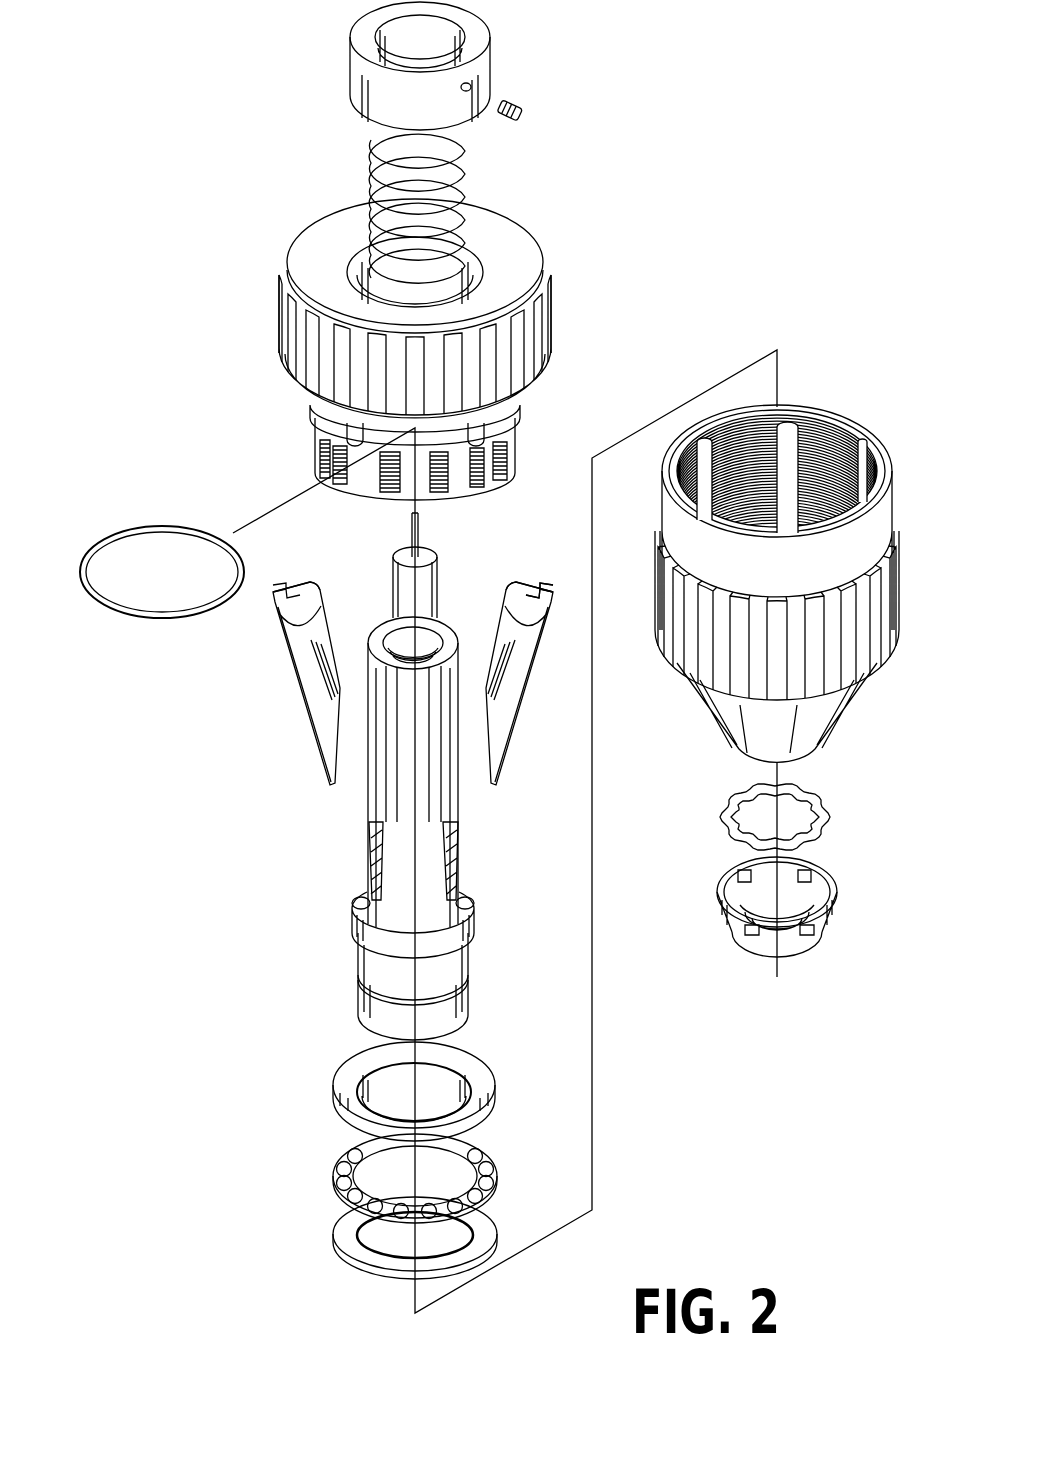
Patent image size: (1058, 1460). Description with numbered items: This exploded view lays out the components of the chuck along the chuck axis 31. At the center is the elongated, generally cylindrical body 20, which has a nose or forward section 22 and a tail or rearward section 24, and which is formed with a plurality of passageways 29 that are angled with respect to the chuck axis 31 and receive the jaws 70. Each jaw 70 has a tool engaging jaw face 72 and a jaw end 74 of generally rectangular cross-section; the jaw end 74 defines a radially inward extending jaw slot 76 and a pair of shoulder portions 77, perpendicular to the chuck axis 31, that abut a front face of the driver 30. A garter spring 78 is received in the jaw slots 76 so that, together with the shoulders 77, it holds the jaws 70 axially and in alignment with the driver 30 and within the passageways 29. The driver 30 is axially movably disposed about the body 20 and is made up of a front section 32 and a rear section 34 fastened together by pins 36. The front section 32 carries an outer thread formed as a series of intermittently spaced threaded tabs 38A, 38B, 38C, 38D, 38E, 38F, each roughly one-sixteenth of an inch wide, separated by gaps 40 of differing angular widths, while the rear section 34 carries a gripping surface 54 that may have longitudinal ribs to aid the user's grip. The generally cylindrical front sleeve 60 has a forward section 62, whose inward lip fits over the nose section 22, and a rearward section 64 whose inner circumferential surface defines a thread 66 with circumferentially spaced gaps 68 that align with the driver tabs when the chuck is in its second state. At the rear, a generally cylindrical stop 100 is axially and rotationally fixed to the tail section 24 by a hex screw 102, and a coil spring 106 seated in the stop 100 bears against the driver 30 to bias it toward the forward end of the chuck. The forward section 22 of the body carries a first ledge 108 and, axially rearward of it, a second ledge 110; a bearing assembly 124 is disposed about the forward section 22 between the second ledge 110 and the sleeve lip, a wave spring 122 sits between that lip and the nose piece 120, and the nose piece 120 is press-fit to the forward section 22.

The body 20 is at (399, 785).
The nose section 22 is at (399, 995).
The tail section 24 is at (377, 630).
The passageways 29 is at (350, 903).
The driver 30 is at (429, 369).
The chuck axis 31 is at (595, 1112).
The front section 32 is at (425, 463).
The rear section 34 is at (402, 296).
The pins 36 is at (525, 405).
The threaded tab 38A is at (505, 480).
The threaded tab 38B is at (480, 490).
The threaded tab 38C is at (442, 503).
The threaded tab 38D is at (393, 498).
The threaded tab 38E is at (343, 487).
The threaded tab 38F is at (327, 473).
The gaps 40 is at (343, 498).
The gripping surface 54 is at (295, 362).
The front sleeve 60 is at (797, 556).
The forward section 62 is at (847, 727).
The rearward section 64 is at (892, 483).
The thread 66 is at (843, 450).
The gap 68 is at (788, 450).
The jaws 70 is at (519, 663).
The jaw face 72 is at (294, 718).
The jaw end 74 is at (512, 600).
The jaw slot 76 is at (548, 588).
The shoulder portions 77 is at (293, 615).
The garter spring 78 is at (178, 620).
The stop 100 is at (493, 62).
The hex screw 102 is at (520, 110).
The coil spring 106 is at (463, 170).
The first ledge 108 is at (378, 1020).
The second ledge 110 is at (385, 985).
The nose piece 120 is at (833, 932).
The wave spring 122 is at (832, 815).
The bearing assembly 124 is at (306, 1175).